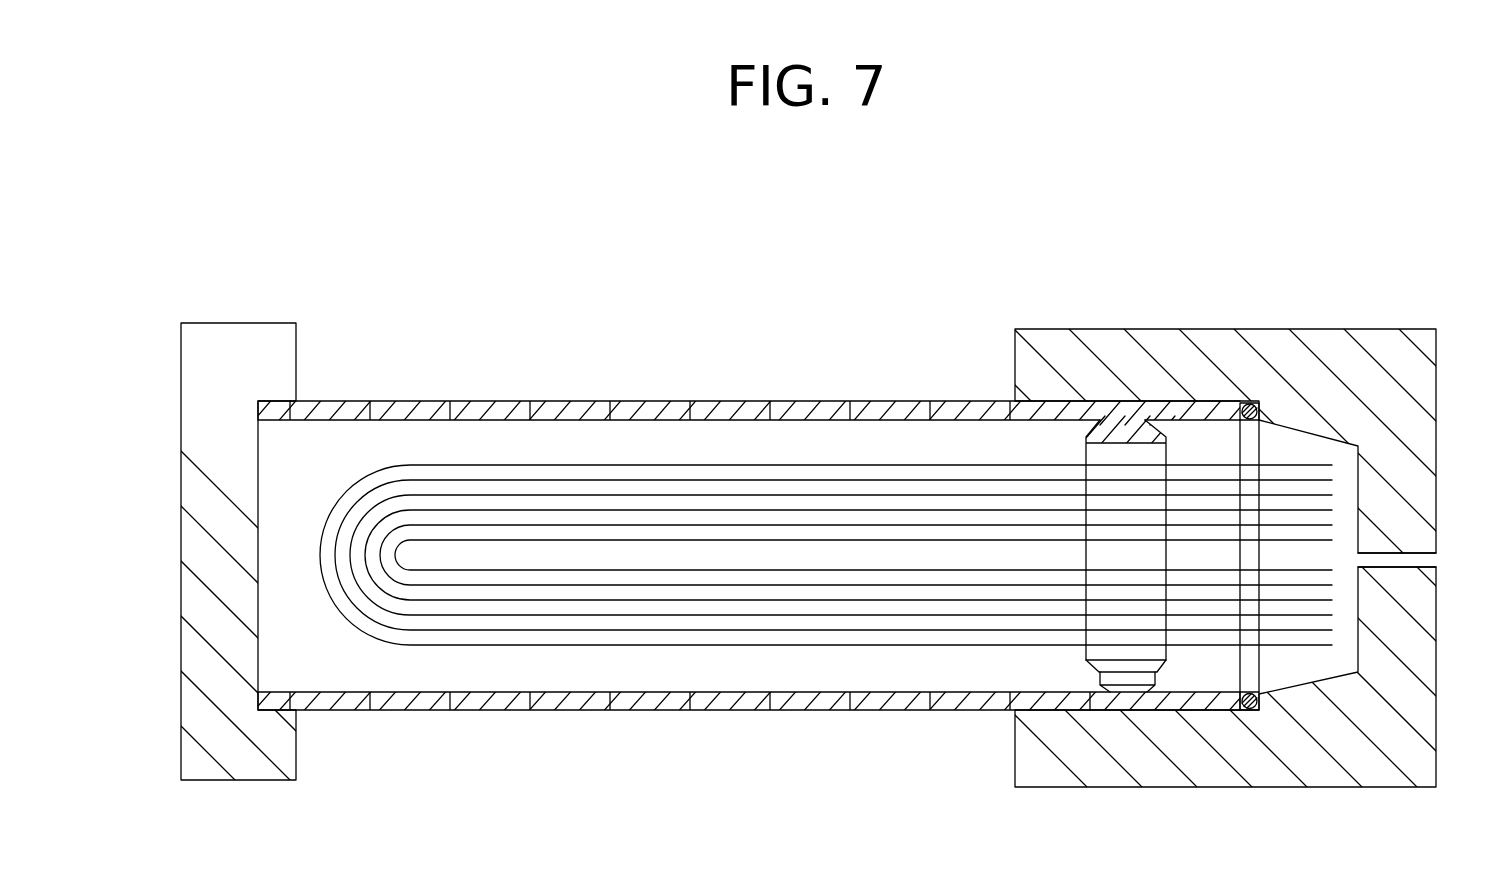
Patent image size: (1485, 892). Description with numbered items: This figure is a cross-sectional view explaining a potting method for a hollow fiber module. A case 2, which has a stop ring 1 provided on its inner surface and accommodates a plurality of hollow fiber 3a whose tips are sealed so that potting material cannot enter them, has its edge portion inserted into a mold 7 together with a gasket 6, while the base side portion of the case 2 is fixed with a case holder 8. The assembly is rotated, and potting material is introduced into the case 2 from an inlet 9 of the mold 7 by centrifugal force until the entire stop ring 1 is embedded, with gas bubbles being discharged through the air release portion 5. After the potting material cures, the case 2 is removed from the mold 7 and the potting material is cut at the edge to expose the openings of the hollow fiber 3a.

The stop ring 1 is at (1163, 432).
The case 2 is at (690, 711).
The hollow fiber 3a is at (528, 648).
The air release portion 5 is at (1142, 676).
The gasket 6 is at (1252, 712).
The mold 7 is at (1437, 766).
The case holder 8 is at (190, 542).
The inlet 9 is at (1437, 566).